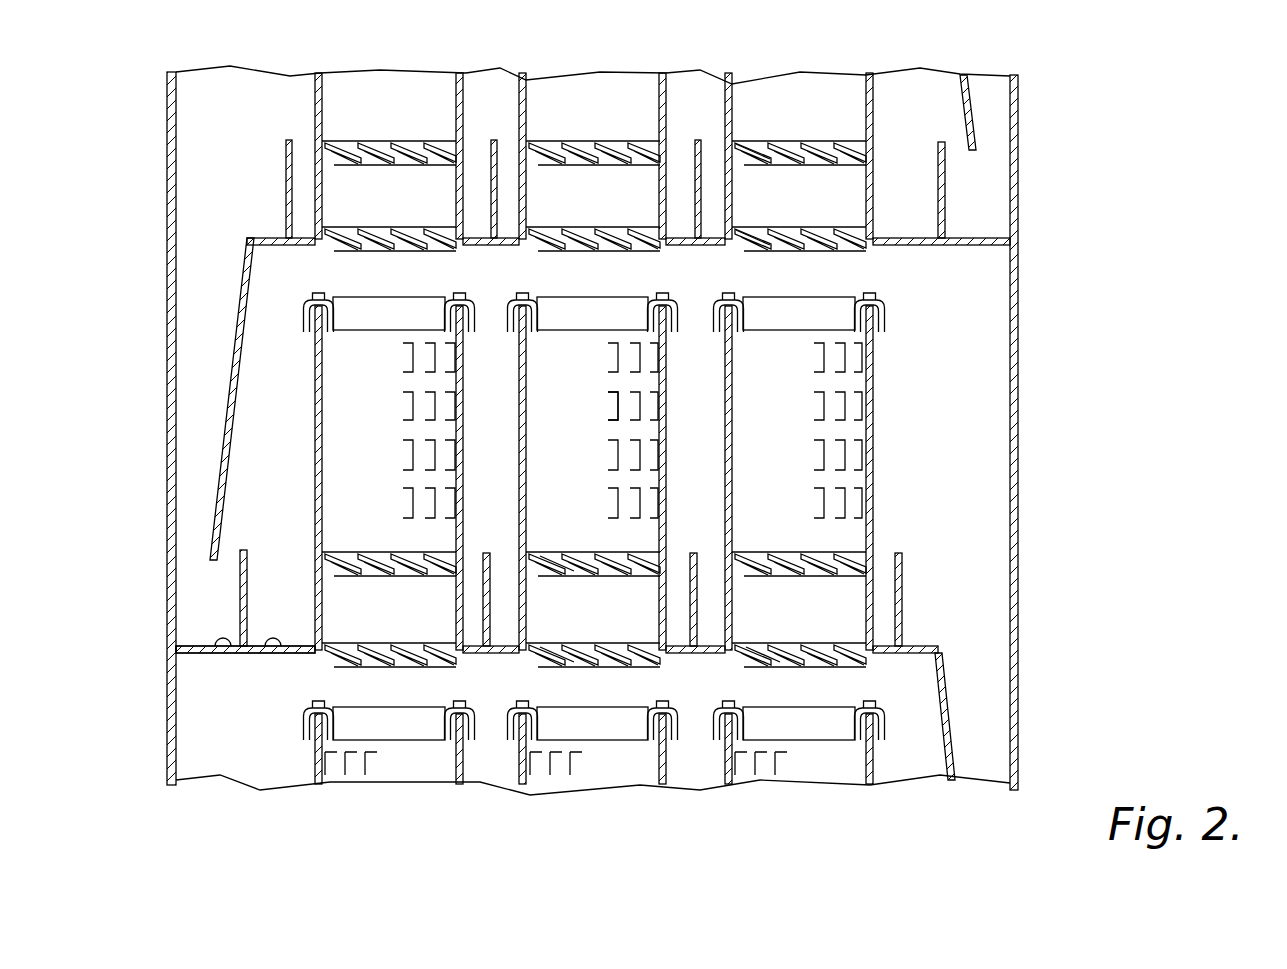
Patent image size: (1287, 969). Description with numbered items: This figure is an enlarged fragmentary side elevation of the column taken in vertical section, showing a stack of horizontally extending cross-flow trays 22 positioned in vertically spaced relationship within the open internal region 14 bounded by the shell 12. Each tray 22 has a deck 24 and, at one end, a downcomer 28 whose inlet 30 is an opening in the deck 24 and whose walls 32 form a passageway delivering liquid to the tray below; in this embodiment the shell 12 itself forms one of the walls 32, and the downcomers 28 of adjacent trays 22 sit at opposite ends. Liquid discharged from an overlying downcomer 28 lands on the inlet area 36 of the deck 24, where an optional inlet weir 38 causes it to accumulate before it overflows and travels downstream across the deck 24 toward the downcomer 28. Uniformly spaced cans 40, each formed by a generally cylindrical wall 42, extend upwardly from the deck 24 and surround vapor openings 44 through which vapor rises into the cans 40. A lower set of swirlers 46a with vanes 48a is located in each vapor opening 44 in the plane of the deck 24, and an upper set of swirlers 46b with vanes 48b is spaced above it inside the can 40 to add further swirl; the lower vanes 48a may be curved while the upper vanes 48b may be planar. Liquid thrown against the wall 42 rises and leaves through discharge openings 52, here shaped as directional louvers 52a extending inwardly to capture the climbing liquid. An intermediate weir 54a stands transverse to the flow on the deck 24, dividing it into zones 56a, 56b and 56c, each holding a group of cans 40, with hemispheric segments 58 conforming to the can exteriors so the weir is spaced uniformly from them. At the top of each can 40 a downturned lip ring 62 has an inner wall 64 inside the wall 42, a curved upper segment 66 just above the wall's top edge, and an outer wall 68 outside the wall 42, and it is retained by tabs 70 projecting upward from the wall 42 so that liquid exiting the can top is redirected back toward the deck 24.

The shell 12 is at (1018, 130).
The open internal region 14 is at (993, 311).
The cross-flow tray 22 is at (995, 252).
The deck 24 is at (1010, 240).
The downcomer 28 is at (250, 293).
The downcomer inlet 30 is at (207, 266).
The downcomer wall 32 is at (972, 90).
The inlet area 36 is at (223, 652).
The inlet weir 38 is at (940, 180).
The can 40 is at (466, 84).
The can wall 42 is at (318, 100).
The vapor opening 44 is at (806, 250).
The lower set of swirlers 46a is at (797, 232).
The upper set of swirlers 46b is at (797, 148).
The lower vanes 48a is at (748, 235).
The upper vanes 48b is at (748, 150).
The discharge opening 52 is at (404, 406).
The directional louver 52a is at (607, 410).
The intermediate weir 54a is at (478, 552).
The first zone 56a is at (276, 652).
The second zone 56b is at (500, 650).
The third zone 56c is at (707, 650).
The hemispheric segment 58 is at (488, 575).
The downturned lip ring 62 is at (402, 298).
The inner wall of lip ring 64 is at (530, 322).
The curved upper segment 66 is at (512, 300).
The outer wall of lip ring 68 is at (884, 325).
The tab 70 is at (872, 293).